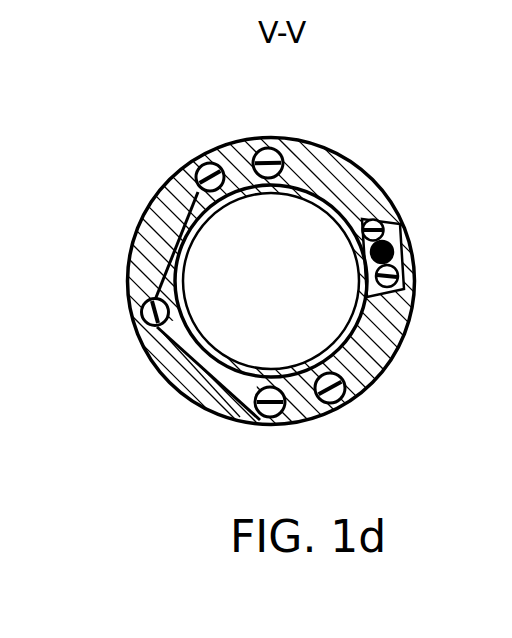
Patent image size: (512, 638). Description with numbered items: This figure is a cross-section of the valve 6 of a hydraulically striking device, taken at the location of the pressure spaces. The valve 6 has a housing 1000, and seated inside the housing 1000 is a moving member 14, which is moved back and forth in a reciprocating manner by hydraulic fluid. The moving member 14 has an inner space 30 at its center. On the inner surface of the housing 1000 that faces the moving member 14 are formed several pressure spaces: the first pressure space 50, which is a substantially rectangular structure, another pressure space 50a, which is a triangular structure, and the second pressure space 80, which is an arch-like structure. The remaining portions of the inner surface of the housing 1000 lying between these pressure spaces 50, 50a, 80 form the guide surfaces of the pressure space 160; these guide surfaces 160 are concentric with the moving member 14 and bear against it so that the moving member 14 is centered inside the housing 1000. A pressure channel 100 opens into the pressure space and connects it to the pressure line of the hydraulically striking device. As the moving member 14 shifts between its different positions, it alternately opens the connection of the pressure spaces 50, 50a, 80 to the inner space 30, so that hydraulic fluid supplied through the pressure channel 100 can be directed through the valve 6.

The valve 6 is at (118, 338).
The moving member 14 is at (292, 195).
The inner space 30 is at (265, 280).
The pressure space 50 is at (378, 236).
The pressure space 50a is at (160, 289).
The second pressure space 80 is at (236, 180).
The pressure channel 100 is at (392, 277).
The guide surfaces of the pressure space 160 is at (342, 207).
The housing 1000 is at (227, 417).